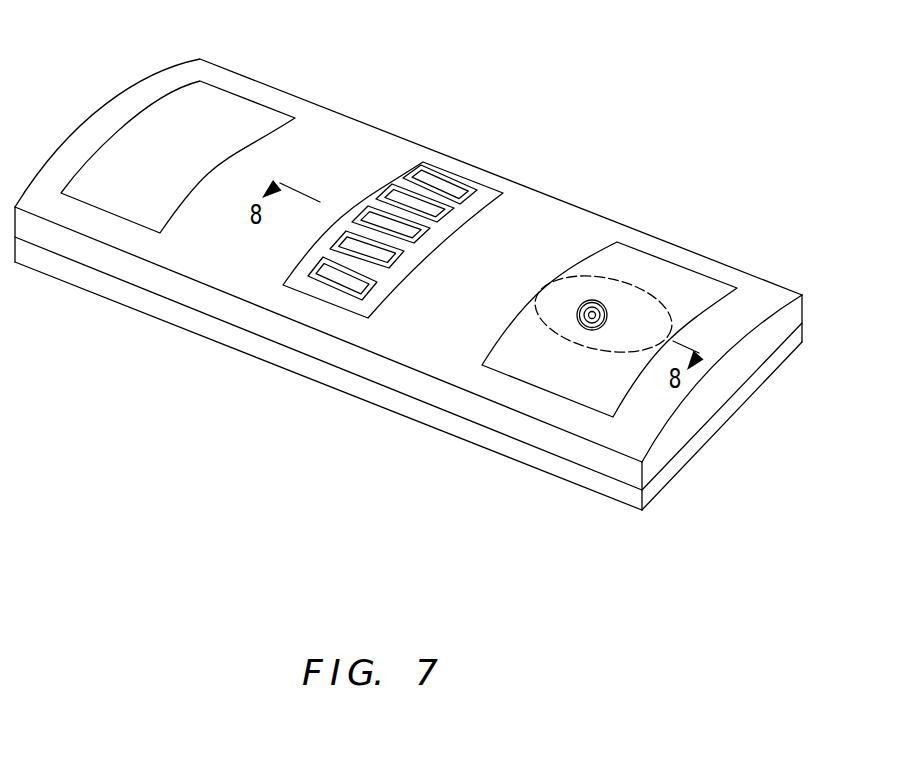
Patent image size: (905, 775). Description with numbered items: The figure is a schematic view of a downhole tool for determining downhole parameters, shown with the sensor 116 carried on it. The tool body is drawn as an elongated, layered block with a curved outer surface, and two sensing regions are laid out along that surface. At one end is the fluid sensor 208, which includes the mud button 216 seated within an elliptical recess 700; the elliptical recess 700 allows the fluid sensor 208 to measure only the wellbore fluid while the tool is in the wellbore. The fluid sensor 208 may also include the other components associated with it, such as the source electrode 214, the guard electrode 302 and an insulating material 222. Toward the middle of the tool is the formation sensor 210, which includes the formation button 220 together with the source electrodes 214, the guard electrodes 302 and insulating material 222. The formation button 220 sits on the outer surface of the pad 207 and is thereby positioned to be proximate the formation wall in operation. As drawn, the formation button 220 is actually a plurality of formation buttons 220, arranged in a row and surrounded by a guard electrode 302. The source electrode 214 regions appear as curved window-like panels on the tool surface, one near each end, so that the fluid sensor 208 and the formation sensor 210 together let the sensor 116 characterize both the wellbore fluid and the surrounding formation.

The sensor 116 is at (678, 213).
The formation sensor 210 is at (448, 127).
The fluid sensor 208 is at (703, 321).
The source electrode 214 is at (167, 113).
The guard electrode 302 is at (377, 290).
The formation button 220 is at (338, 283).
The elliptical recess 700 is at (602, 275).
The mud button 216 is at (607, 313).
The insulating material 222 is at (315, 174).
The pad 207 is at (467, 319).